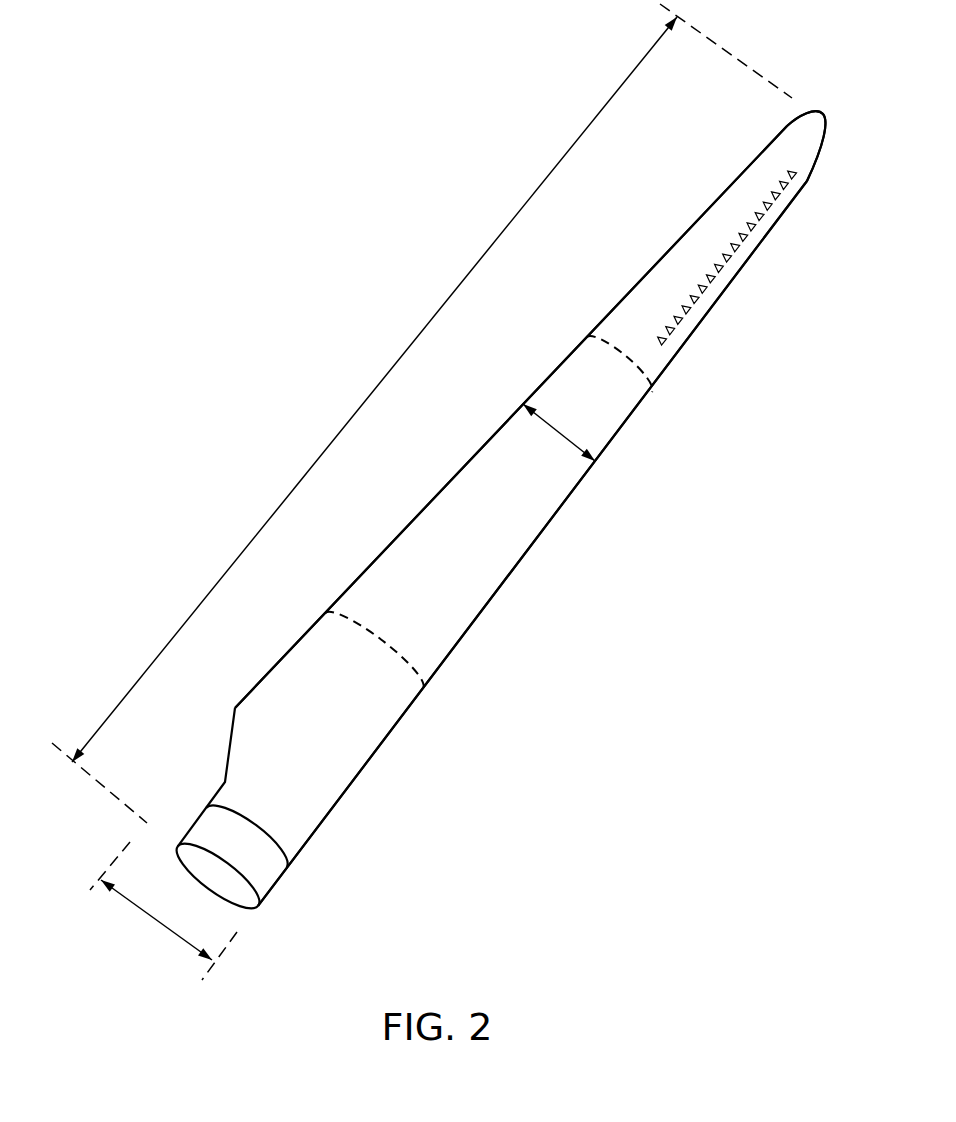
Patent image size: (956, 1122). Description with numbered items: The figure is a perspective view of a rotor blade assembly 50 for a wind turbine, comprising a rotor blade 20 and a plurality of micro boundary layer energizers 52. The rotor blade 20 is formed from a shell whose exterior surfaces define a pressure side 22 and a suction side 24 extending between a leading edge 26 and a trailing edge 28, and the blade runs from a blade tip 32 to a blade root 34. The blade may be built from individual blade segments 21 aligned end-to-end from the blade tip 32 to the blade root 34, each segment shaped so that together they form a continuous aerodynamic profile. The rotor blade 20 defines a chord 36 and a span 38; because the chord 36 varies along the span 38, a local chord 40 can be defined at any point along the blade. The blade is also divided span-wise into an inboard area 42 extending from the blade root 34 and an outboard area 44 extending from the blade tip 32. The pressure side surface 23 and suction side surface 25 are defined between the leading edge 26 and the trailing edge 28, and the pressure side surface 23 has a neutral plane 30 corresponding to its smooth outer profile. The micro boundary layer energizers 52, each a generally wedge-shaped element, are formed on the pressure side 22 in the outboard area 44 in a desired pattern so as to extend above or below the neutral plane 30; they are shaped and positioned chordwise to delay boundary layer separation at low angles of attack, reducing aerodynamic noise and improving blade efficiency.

The rotor blade 20 is at (503, 356).
The blade segments 21 is at (753, 254).
The pressure side 22 is at (548, 516).
The pressure side surface 23 is at (416, 590).
The suction side 24 is at (454, 458).
The suction side surface 25 is at (585, 317).
The leading edge 26 is at (517, 572).
The trailing edge 28 is at (398, 530).
The neutral plane 30 is at (345, 594).
The blade tip 32 is at (822, 113).
The blade root 34 is at (213, 874).
The chord 36 is at (155, 920).
The span 38 is at (418, 334).
The local chord 40 is at (582, 452).
The inboard area 42 is at (370, 718).
The outboard area 44 is at (735, 176).
The rotor blade assembly 50 is at (208, 326).
The micro boundary layer energizers 52 is at (683, 327).